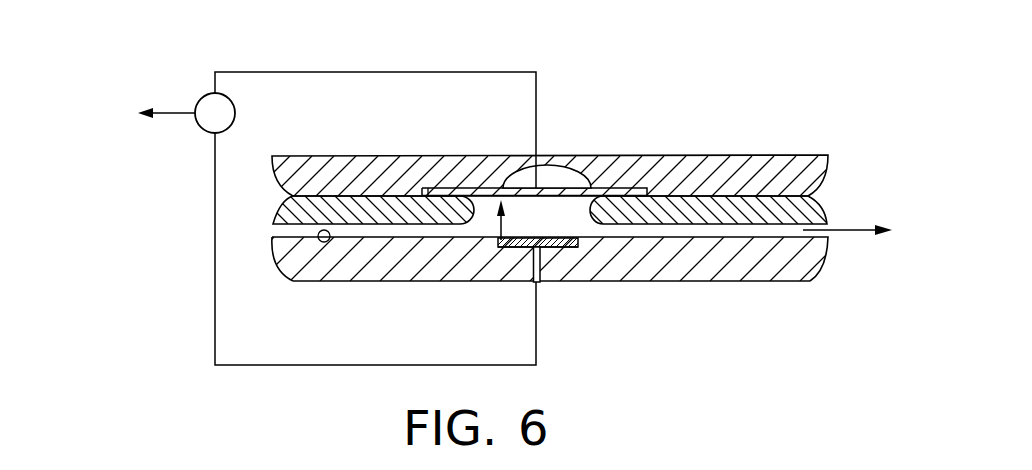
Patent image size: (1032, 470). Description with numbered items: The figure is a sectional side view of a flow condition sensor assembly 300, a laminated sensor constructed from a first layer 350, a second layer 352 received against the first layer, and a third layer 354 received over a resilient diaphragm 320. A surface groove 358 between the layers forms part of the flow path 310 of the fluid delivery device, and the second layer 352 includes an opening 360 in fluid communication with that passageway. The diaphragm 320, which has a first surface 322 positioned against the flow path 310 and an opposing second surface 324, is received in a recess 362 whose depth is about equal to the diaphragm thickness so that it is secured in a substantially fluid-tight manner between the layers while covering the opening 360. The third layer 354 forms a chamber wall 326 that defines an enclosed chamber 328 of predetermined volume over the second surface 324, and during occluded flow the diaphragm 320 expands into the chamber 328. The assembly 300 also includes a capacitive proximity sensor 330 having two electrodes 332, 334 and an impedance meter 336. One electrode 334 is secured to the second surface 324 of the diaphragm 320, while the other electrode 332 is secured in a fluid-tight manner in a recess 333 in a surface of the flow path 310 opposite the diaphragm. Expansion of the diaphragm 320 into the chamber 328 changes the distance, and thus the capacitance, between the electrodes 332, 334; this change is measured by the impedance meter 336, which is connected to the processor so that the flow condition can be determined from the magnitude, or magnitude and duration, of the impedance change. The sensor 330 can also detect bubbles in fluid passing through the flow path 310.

The flow condition sensor assembly 300 is at (565, 201).
The flow path 310 is at (858, 233).
The diaphragm 320 is at (501, 240).
The first surface of the diaphragm 322 is at (585, 197).
The second surface of the diaphragm 324 is at (573, 198).
The chamber wall 326 is at (565, 175).
The chamber 328 is at (557, 180).
The capacitive proximity sensor 330 is at (527, 203).
The electrode 332 is at (567, 198).
The recess 333 is at (550, 247).
The electrode 334 is at (478, 192).
The impedance meter 336 is at (236, 108).
The first layer 350 is at (768, 272).
The second layer 352 is at (812, 203).
The third layer 354 is at (792, 162).
The surface groove 358 is at (323, 242).
The opening 360 is at (447, 282).
The recess 362 is at (421, 188).